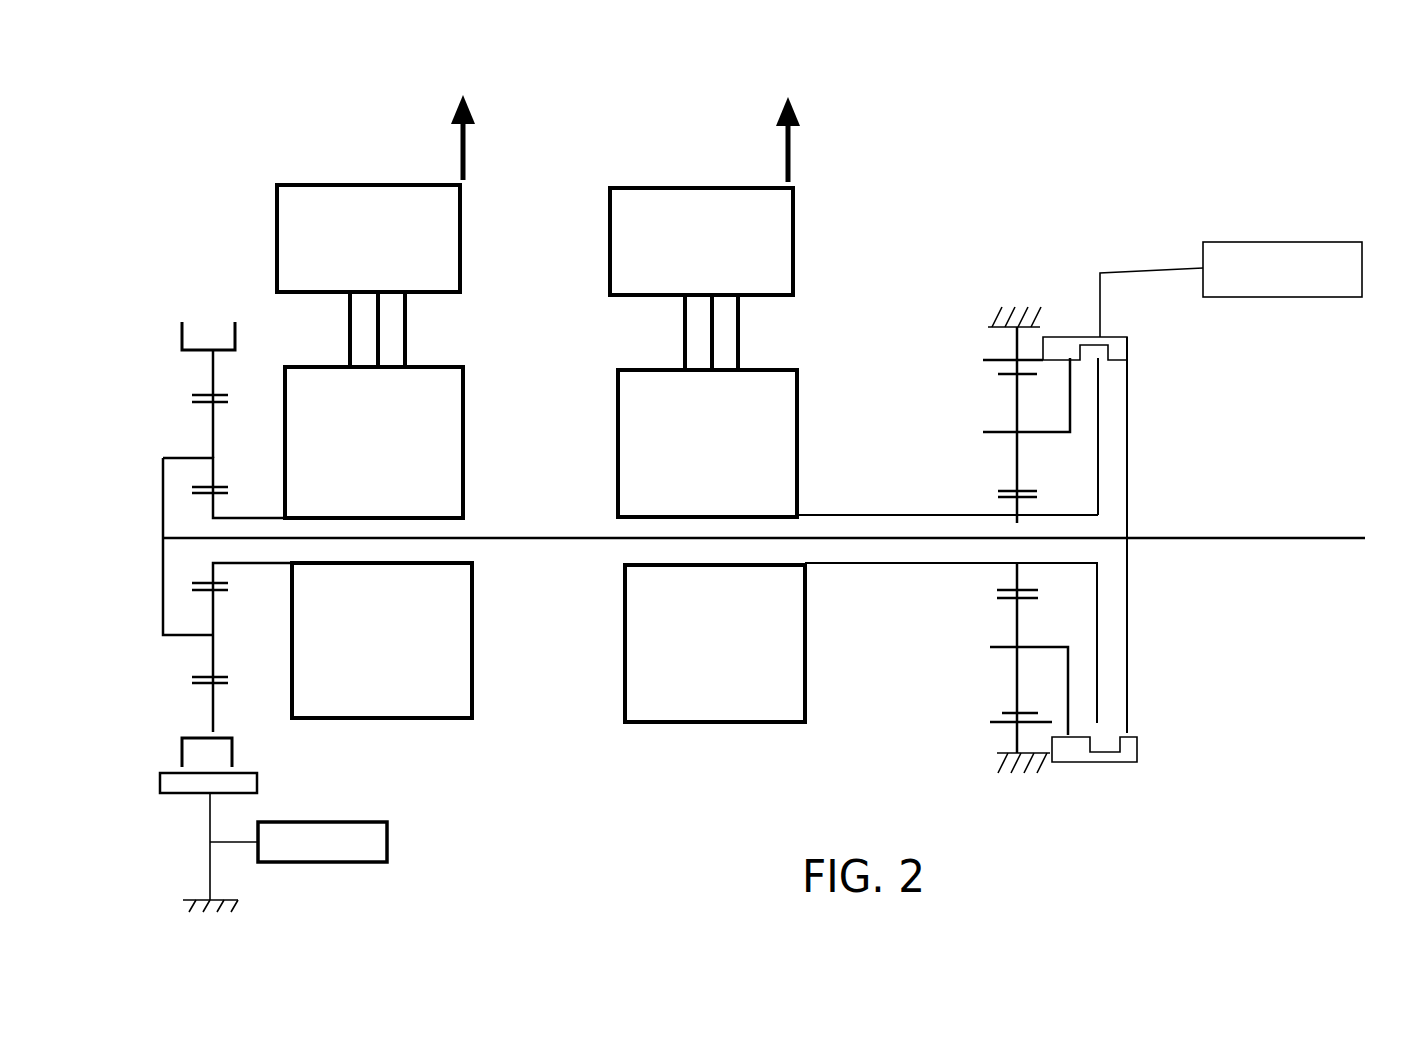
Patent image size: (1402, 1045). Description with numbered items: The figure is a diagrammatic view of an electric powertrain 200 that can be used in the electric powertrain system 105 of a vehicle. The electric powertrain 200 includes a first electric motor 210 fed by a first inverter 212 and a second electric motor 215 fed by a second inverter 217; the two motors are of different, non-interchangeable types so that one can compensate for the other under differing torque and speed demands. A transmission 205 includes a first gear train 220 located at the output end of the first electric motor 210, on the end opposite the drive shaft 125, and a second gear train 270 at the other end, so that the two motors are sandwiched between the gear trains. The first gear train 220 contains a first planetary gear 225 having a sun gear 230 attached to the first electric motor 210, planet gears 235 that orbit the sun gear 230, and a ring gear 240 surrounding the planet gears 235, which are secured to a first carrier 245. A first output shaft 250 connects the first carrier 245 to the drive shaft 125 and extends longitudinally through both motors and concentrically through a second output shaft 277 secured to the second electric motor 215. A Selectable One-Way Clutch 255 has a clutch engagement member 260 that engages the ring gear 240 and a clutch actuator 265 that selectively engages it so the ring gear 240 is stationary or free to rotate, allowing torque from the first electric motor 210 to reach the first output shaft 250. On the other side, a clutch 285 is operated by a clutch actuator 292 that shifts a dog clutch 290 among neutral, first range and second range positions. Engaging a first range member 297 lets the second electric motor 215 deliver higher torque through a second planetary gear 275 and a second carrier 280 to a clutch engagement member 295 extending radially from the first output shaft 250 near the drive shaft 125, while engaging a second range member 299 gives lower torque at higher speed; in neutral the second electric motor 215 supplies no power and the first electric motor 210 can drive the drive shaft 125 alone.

The electric powertrain system 105 is at (1121, 68).
The drive shaft 125 is at (1340, 537).
The electric powertrain 200 is at (1169, 118).
The transmission 205 is at (1173, 238).
The first electric motor 210 is at (460, 745).
The first inverter 212 is at (368, 185).
The second electric motor 215 is at (696, 750).
The second inverter 217 is at (645, 190).
The first gear train 220 is at (243, 856).
The first planetary gear 225 is at (210, 368).
The sun gear 230 is at (213, 508).
The planet gears 235 is at (213, 438).
The ring gear 240 is at (233, 745).
The first carrier 245 is at (173, 636).
The first output shaft 250 is at (524, 540).
The Selectable One-Way Clutch (SOWC) 255 is at (307, 878).
The clutch engagement member 260 is at (172, 785).
The clutch actuator 265 is at (373, 855).
The second gear train 270 is at (1016, 795).
The second planetary gear 275 is at (1018, 668).
The second output shaft 277 is at (840, 515).
The second carrier 280 is at (1045, 433).
The clutch 285 is at (1073, 337).
The dog clutch 290 is at (1095, 252).
The clutch actuator 292 is at (1303, 242).
The clutch engagement member 295 is at (1127, 396).
The first range member 297 is at (1070, 397).
The second range member 299 is at (1100, 425).